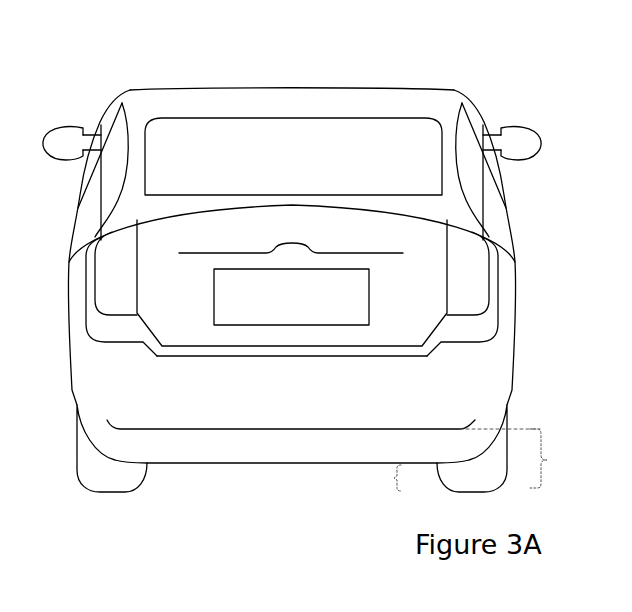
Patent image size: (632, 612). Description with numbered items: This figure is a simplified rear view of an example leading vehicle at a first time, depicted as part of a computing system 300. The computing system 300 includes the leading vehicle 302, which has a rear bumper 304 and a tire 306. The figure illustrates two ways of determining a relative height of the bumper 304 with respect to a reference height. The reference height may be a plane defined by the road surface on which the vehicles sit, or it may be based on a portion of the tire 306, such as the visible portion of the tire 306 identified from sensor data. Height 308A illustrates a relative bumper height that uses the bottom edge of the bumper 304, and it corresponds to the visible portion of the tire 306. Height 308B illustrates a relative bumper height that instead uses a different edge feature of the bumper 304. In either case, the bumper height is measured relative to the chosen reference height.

The computing system 300 is at (326, 255).
The leading vehicle 302 is at (418, 100).
The rear bumper 304 is at (291, 434).
The tire 306 is at (472, 448).
The height 308A is at (365, 478).
The height 308B is at (535, 458).